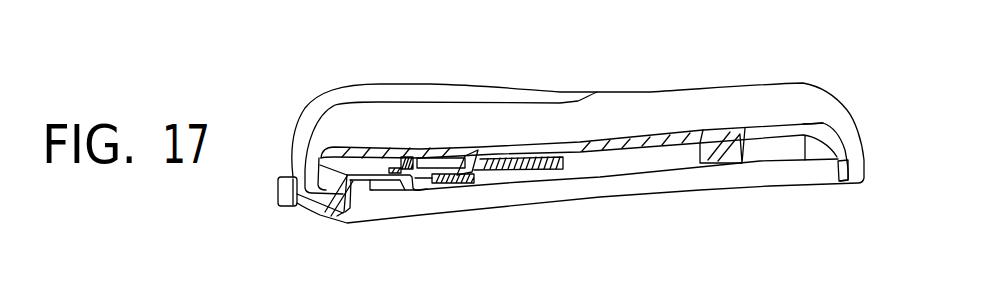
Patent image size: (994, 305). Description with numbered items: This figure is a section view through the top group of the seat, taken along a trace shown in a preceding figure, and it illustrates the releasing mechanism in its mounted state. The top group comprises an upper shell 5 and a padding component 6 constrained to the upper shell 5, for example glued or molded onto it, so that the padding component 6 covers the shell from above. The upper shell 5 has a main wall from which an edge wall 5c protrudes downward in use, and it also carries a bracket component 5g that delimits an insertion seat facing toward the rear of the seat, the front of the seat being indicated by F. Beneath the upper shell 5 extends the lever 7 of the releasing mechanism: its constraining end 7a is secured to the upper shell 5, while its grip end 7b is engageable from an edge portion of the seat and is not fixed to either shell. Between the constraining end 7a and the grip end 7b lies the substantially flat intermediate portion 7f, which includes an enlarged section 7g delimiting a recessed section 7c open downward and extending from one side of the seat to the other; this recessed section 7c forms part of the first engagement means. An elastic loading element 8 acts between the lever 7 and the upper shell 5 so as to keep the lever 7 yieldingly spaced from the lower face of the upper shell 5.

The padding component 6 is at (624, 93).
The upper shell 5 is at (804, 138).
The edge wall 5c is at (733, 165).
The bracket component 5g is at (476, 163).
The lever 7 is at (326, 219).
The constraining end 7a is at (542, 167).
The grip end 7b is at (278, 193).
The recessed section 7c is at (410, 184).
The intermediate portion 7f is at (377, 183).
The enlarged section 7g is at (395, 170).
The elastic loading element 8 is at (412, 157).
The front F is at (872, 140).